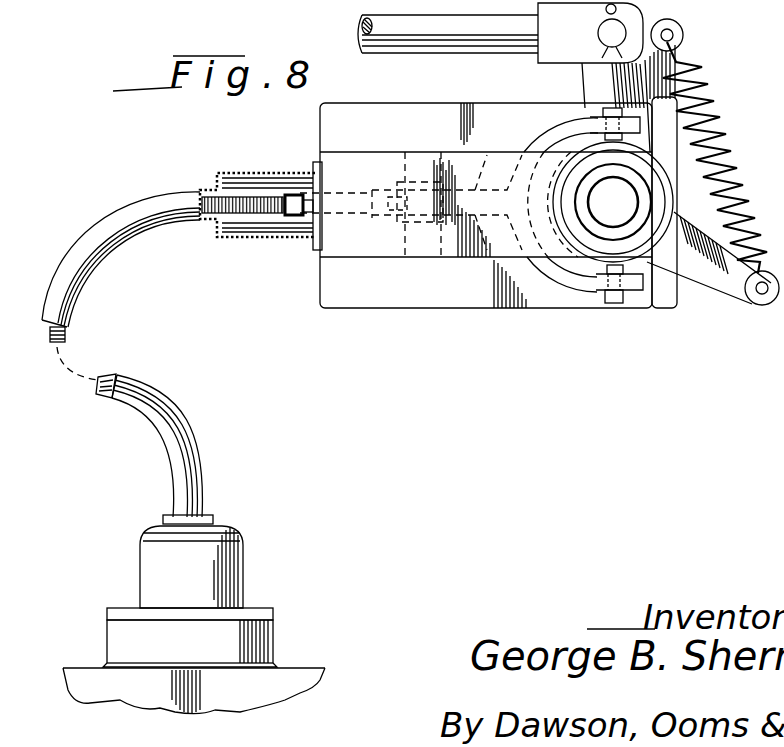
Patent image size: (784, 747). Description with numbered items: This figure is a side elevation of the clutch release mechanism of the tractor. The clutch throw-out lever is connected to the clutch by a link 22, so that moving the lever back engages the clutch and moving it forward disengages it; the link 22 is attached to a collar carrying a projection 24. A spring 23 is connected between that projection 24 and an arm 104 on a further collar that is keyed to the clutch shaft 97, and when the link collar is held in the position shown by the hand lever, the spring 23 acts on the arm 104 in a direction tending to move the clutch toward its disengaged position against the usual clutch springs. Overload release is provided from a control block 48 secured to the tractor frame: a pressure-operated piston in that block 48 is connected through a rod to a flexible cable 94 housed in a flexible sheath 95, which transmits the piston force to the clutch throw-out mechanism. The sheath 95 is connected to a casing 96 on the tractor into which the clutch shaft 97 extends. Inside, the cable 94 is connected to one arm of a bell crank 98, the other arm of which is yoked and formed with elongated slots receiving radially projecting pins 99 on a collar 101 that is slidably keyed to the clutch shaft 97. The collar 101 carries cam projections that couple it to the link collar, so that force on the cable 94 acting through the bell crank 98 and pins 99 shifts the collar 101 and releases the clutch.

The link 22 is at (438, 44).
The spring 23 is at (717, 115).
The projection 24 is at (703, 289).
The control block 48 is at (286, 677).
The flexible cable 94 is at (250, 198).
The flexible sheath 95 is at (182, 197).
The casing 96 is at (428, 302).
The clutch shaft 97 is at (600, 214).
The bell crank 98 is at (490, 154).
The radially projecting pins 99 is at (607, 108).
The collar 101 is at (658, 304).
The arm 104 is at (668, 22).